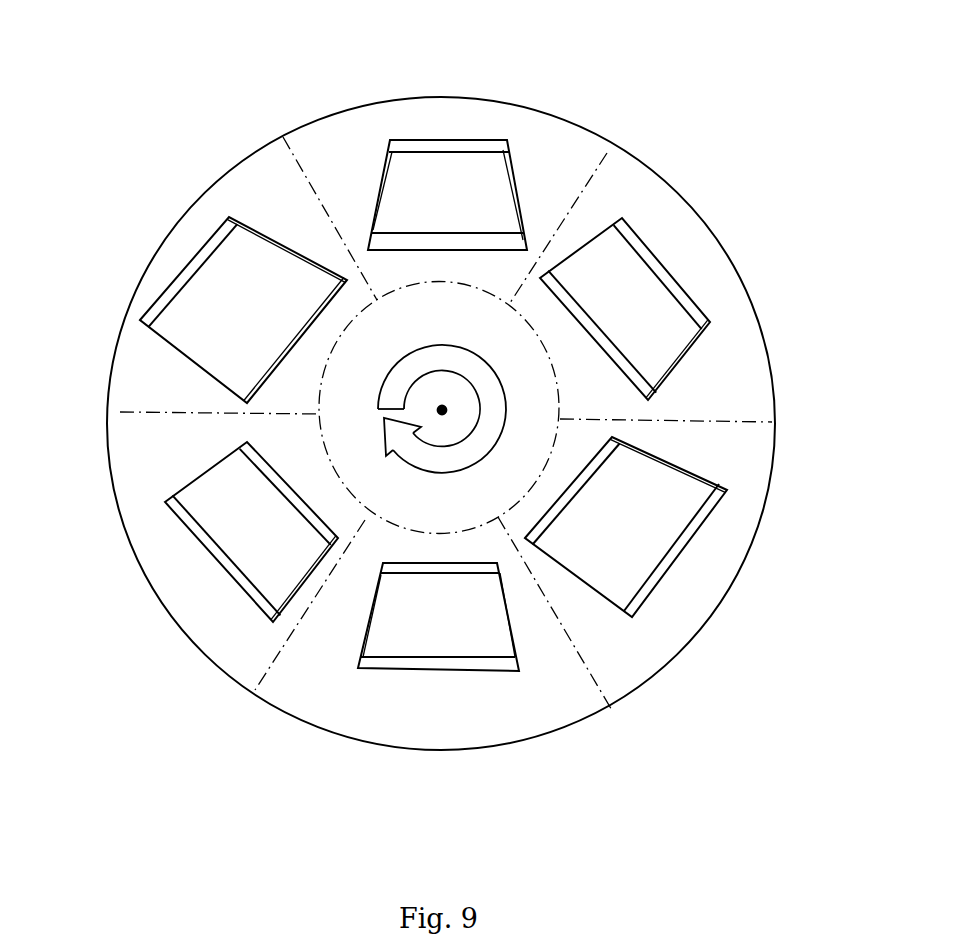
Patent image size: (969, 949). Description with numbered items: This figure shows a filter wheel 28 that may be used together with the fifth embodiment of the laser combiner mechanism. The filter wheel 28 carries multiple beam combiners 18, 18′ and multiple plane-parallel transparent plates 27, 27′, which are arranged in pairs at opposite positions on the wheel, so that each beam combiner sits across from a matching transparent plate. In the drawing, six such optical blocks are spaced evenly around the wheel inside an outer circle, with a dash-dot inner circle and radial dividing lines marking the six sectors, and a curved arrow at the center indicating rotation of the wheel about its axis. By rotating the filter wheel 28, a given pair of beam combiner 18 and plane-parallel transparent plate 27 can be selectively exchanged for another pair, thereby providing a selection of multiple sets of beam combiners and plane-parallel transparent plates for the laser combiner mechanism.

The beam combiner 18 is at (703, 535).
The beam combiner 18′ is at (440, 673).
The plane-parallel transparent plate 27 is at (197, 277).
The plane-parallel transparent plate 27′ is at (445, 146).
The filter wheel 28 is at (643, 163).